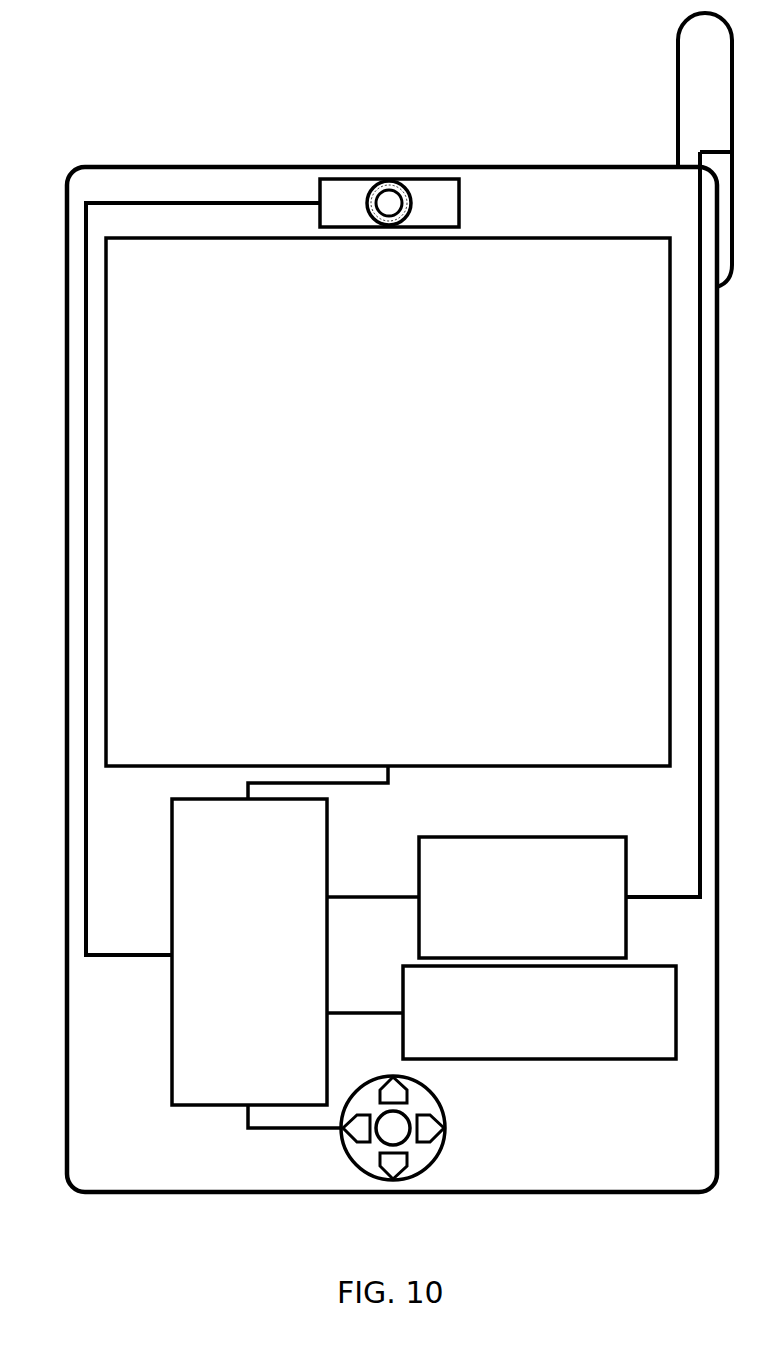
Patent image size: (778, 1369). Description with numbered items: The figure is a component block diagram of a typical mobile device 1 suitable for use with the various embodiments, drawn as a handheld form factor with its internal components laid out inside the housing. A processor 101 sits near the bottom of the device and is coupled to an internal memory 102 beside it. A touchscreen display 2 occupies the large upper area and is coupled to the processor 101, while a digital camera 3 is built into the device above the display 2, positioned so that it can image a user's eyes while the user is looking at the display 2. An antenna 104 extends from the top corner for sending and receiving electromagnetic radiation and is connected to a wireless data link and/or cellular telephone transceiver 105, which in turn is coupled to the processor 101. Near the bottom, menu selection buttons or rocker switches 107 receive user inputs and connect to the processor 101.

The mobile device 1 is at (343, 167).
The touchscreen display 2 is at (402, 506).
The digital camera 3 is at (459, 203).
The processor 101 is at (278, 966).
The internal memory 102 is at (561, 1026).
The antenna 104 is at (678, 49).
The wireless data link and/or cellular telephone transceiver 105 is at (543, 910).
The menu selection buttons or rocker switches 107 is at (445, 1128).